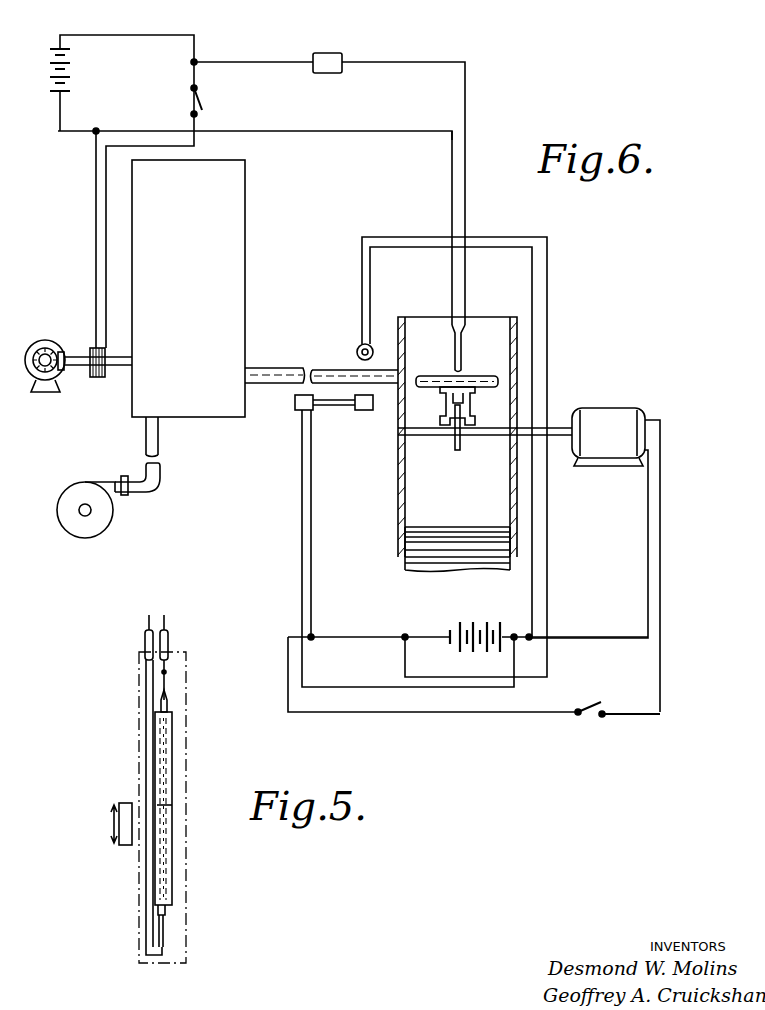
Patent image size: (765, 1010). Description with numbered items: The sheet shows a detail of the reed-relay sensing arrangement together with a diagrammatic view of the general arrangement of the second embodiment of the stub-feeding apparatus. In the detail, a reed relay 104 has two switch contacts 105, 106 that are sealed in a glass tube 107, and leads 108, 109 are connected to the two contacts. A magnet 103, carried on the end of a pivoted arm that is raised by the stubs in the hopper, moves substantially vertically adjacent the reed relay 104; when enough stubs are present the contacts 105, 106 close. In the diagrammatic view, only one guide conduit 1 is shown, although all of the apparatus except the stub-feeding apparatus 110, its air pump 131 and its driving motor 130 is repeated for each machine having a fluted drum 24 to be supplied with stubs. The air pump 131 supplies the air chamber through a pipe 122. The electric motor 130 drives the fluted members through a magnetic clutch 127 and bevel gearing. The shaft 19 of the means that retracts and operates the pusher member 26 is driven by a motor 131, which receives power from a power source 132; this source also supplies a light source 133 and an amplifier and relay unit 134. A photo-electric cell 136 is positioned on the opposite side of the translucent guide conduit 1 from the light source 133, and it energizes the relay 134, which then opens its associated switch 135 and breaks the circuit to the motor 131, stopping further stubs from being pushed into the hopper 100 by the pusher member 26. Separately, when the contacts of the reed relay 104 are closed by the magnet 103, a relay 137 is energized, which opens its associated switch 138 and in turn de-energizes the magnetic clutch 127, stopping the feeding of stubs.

In FIG. 6, the guide conduit 1 is at (281, 368).
In FIG. 6, the shaft 19 is at (478, 440).
In FIG. 6, the fluted drum 24 is at (442, 557).
In FIG. 6, the pusher member 26 is at (500, 381).
In FIG. 6, the hopper 100 is at (518, 350).
In FIG. 5, the magnet 103 is at (112, 830).
In FIG. 6, the reed relay 104 is at (463, 345).
In FIG. 5, the reed relay 104 is at (187, 683).
In FIG. 5, the switch contact 105 is at (140, 800).
In FIG. 5, the switch contact 106 is at (172, 805).
In FIG. 5, the glass tube 107 is at (173, 745).
In FIG. 6, the lead 108 is at (466, 96).
In FIG. 5, the lead 108 is at (166, 621).
In FIG. 6, the lead 109 is at (392, 131).
In FIG. 5, the lead 109 is at (148, 623).
In FIG. 6, the stub-feeding apparatus 110 is at (245, 200).
In FIG. 6, the pipe 122 is at (160, 447).
In FIG. 6, the magnetic clutch 127 is at (97, 380).
In FIG. 6, the electric motor 130 is at (42, 340).
In FIG. 6, the motor 131 is at (112, 520).
In FIG. 6, the power source 132 is at (485, 625).
In FIG. 6, the light source 133 is at (356, 351).
In FIG. 6, the amplifier and relay unit 134 is at (298, 412).
In FIG. 6, the switch 135 is at (597, 720).
In FIG. 6, the photo-electric cell 136 is at (362, 412).
In FIG. 6, the relay 137 is at (326, 43).
In FIG. 6, the switch 138 is at (204, 99).